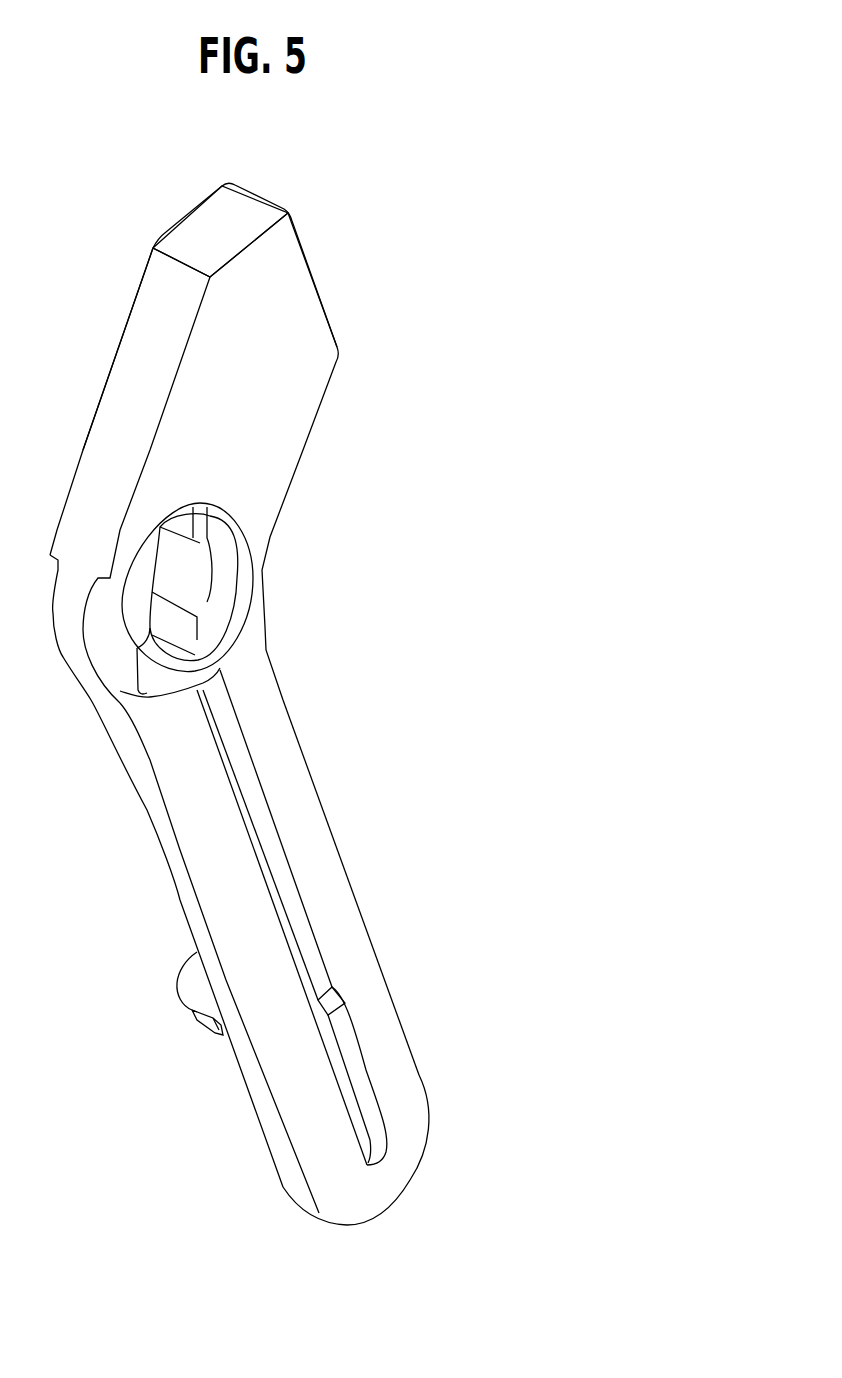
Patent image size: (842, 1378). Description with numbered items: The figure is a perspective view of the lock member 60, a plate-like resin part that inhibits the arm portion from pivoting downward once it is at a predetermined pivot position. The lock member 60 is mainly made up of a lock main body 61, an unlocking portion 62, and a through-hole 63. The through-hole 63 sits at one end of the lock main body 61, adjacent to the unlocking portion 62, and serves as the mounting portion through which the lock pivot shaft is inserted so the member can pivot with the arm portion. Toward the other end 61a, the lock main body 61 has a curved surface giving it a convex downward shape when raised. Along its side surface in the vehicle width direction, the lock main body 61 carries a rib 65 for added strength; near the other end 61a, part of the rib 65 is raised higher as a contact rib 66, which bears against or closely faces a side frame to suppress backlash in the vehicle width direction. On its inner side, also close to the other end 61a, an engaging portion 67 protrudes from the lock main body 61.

The lock member 60 is at (303, 703).
The lock main body 61 is at (312, 825).
The other end 61a is at (387, 1210).
The unlocking portion 62 is at (307, 339).
The through-hole 63 is at (193, 577).
The rib 65 is at (295, 920).
The contact rib 66 is at (357, 1070).
The engaging portion 67 is at (190, 990).